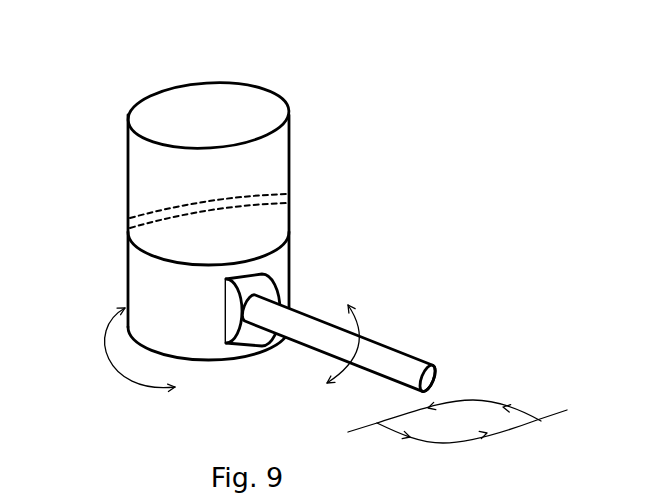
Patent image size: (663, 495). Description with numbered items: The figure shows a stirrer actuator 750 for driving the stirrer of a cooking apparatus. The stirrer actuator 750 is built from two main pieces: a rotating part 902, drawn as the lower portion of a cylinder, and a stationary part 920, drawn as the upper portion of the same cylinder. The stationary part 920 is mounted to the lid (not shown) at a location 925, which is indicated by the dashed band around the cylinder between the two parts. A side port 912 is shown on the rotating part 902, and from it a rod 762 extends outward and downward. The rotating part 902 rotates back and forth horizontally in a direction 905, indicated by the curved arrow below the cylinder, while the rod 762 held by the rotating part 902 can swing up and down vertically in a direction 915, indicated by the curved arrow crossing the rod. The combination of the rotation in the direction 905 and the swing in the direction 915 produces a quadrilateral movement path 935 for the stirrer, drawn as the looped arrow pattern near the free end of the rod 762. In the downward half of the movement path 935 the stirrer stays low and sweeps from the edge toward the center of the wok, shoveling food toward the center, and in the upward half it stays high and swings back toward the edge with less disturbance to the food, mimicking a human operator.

The stirrer actuator 750 is at (247, 214).
The rotating part 902 is at (212, 206).
The stationary part 920 is at (212, 98).
The location 925 is at (255, 195).
The side port 912 is at (260, 285).
The rod 762 is at (382, 355).
The direction 905 is at (140, 362).
The direction 915 is at (329, 357).
The quadrilateral movement path 935 is at (457, 433).